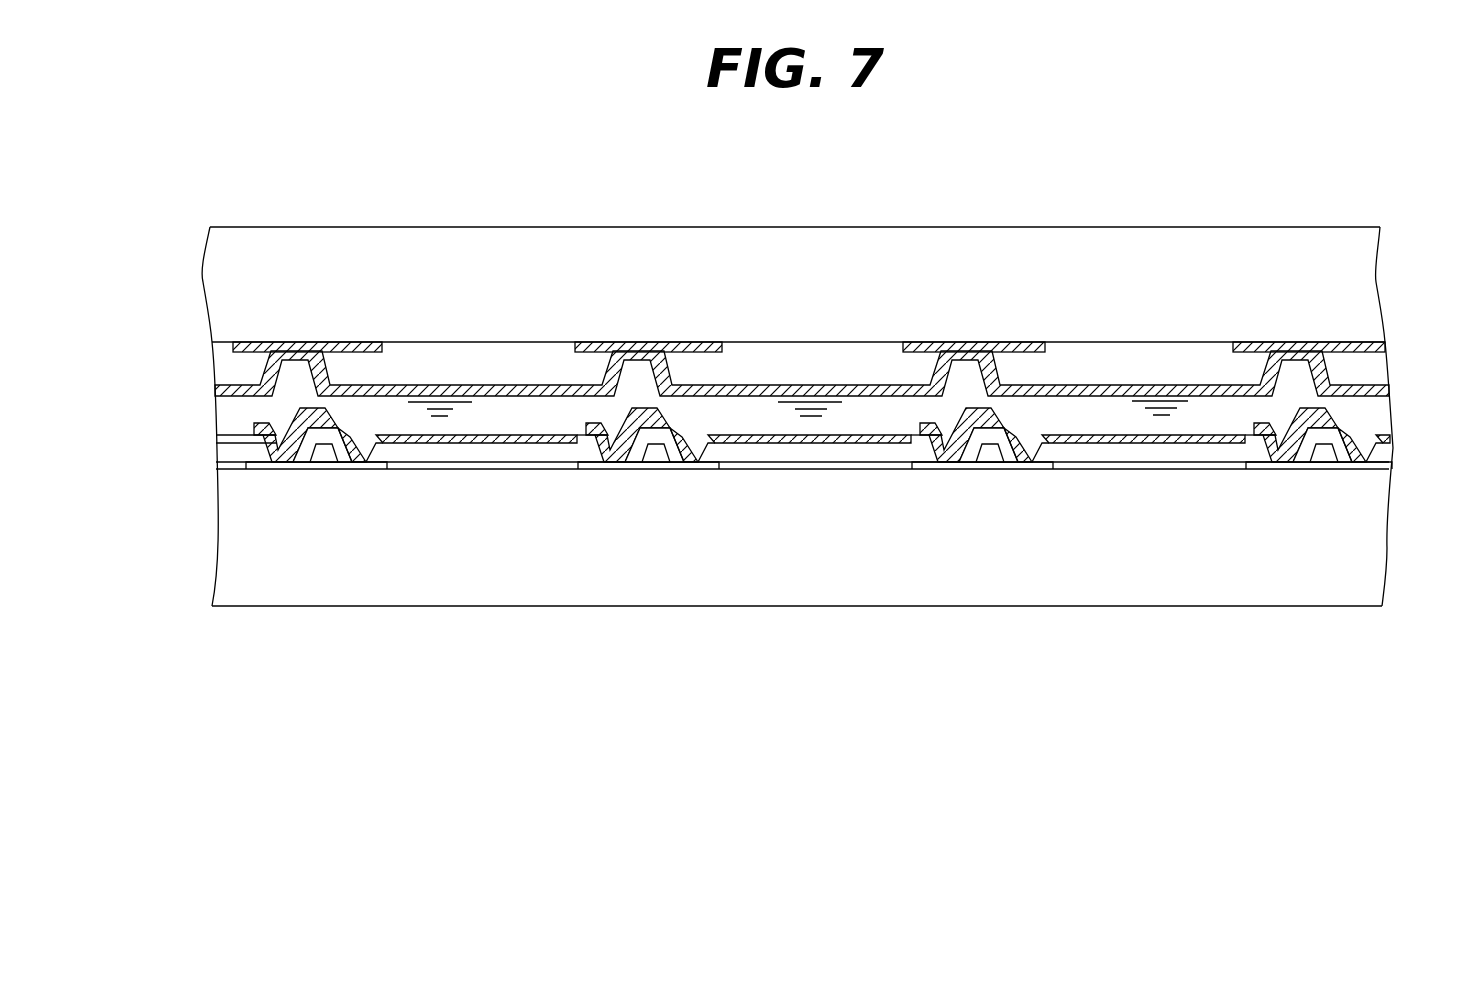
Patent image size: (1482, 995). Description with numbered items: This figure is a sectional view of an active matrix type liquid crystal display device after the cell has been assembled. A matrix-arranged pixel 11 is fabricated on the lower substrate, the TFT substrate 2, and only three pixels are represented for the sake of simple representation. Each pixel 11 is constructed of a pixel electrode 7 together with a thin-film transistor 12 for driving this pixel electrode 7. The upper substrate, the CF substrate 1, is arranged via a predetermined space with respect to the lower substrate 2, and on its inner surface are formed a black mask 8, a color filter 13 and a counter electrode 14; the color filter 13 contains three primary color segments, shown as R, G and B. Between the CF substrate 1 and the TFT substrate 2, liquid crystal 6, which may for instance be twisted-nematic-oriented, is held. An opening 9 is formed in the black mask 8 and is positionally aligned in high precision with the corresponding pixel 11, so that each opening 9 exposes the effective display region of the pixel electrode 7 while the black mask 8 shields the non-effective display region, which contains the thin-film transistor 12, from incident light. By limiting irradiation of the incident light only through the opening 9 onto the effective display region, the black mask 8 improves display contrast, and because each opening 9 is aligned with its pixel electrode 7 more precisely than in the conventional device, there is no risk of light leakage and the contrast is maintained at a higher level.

The upper substrate (CF substrate) 1 is at (1340, 285).
The lower substrate (TFT substrate) 2 is at (1347, 542).
The liquid crystal 6 is at (228, 420).
The pixel electrode 7 is at (520, 447).
The black mask 8 is at (348, 342).
The opening 9 is at (482, 312).
The pixel 11 is at (479, 498).
The thin-film transistor 12 is at (310, 464).
The color filter 13 is at (1206, 362).
The counter electrode 14 is at (1386, 391).